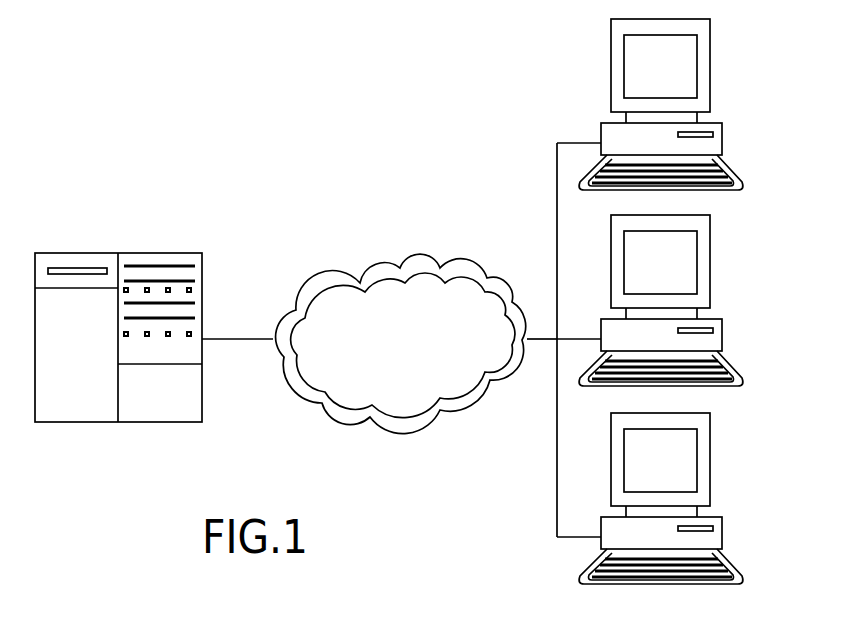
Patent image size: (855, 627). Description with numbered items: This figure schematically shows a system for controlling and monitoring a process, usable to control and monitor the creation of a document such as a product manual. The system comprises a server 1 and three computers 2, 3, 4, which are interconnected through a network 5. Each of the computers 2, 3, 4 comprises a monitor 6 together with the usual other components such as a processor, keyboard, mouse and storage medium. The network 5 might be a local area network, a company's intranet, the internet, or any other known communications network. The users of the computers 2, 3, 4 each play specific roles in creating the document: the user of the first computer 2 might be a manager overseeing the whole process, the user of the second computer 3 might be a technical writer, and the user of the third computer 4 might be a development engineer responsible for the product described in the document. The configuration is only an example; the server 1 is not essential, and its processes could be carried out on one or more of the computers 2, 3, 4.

The server 1 is at (118, 245).
The first computer 2 is at (663, 97).
The second computer 3 is at (663, 300).
The third computer 4 is at (663, 498).
The network 5 is at (390, 254).
The monitor 6 is at (722, 67).